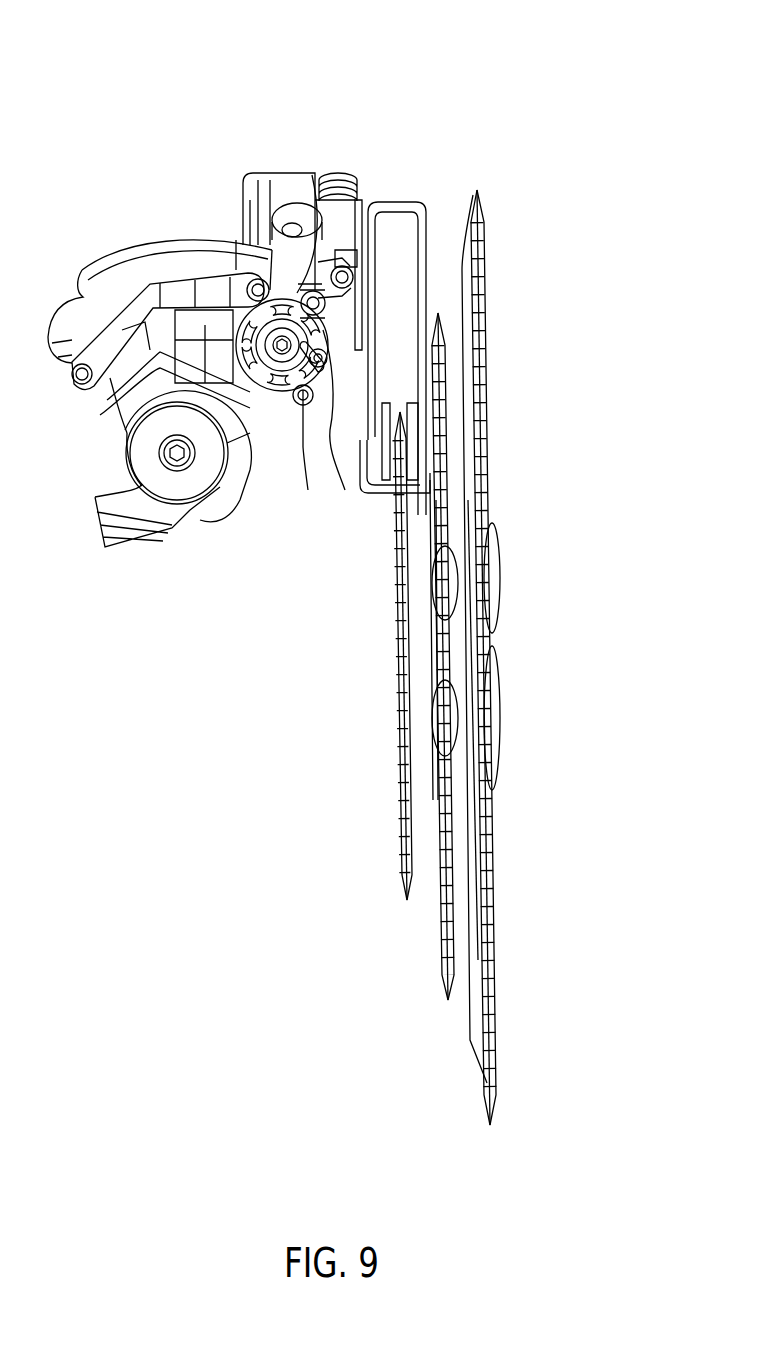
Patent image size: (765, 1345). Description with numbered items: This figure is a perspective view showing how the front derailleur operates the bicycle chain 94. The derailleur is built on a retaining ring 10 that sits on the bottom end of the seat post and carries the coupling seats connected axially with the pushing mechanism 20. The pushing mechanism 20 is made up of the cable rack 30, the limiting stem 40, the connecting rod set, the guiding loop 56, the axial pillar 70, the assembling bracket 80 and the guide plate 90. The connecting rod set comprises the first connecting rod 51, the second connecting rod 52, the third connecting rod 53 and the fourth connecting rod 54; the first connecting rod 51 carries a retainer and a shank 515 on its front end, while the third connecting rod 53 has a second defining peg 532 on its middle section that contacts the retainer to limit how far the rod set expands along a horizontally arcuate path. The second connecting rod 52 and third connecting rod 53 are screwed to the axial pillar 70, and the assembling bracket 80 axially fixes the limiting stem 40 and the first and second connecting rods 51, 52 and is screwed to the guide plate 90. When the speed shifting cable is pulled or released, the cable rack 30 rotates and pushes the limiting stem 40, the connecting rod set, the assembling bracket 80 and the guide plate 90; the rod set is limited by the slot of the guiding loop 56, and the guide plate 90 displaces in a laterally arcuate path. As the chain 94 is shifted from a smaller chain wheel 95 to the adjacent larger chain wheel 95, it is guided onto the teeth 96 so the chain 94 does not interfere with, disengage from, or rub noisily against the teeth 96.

The retaining ring 10 is at (168, 237).
The pushing mechanism 20 is at (335, 170).
The cable rack 30 is at (125, 450).
The limiting stem 40 is at (137, 242).
The first connecting rod 51 is at (290, 405).
The shank 515 is at (322, 380).
The second connecting rod 52 is at (340, 347).
The third connecting rod 53 is at (310, 195).
The second defining peg 532 is at (305, 405).
The fourth connecting rod 54 is at (305, 320).
The guiding loop 56 is at (278, 392).
The axial pillar 70 is at (347, 275).
The assembling bracket 80 is at (288, 173).
The guide plate 90 is at (433, 507).
The chain 94 is at (440, 405).
The chain wheel 95 is at (483, 343).
The teeth 96 is at (405, 450).